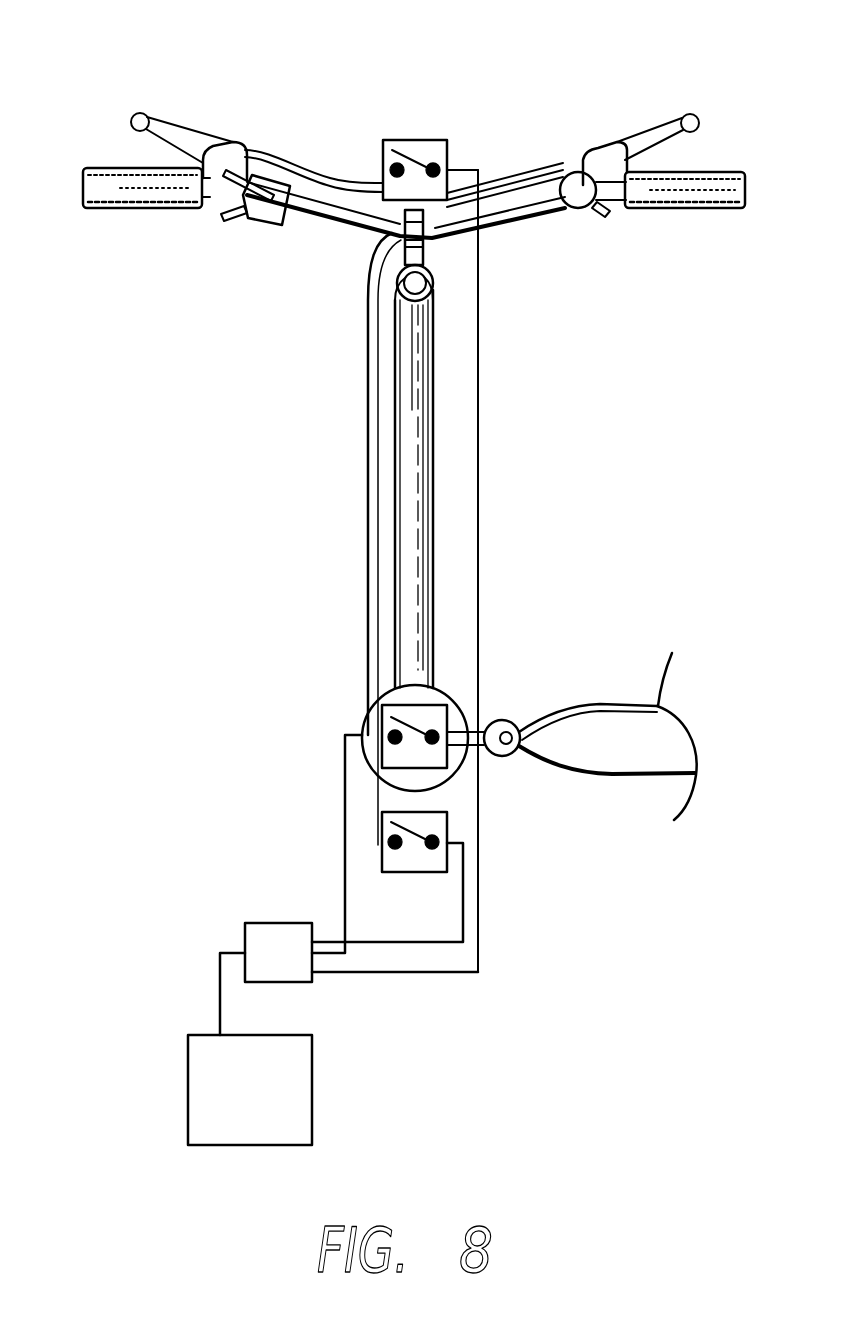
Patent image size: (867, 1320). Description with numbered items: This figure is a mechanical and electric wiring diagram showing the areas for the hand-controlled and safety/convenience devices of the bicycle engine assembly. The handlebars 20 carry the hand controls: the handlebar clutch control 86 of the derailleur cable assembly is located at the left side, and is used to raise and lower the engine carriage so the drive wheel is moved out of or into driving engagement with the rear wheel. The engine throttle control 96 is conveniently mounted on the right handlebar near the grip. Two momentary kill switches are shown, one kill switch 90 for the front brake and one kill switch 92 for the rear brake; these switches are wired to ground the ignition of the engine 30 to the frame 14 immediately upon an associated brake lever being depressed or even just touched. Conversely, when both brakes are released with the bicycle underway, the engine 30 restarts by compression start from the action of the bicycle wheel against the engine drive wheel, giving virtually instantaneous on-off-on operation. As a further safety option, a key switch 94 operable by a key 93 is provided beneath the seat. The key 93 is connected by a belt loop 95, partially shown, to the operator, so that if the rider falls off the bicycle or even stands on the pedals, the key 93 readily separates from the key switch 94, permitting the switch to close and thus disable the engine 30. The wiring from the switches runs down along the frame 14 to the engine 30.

The handlebars 20 is at (421, 88).
The momentary kill switch 90 is at (440, 152).
The handlebar clutch control 86 is at (262, 248).
The engine throttle control 96 is at (580, 232).
The frame 14 is at (412, 514).
The key switch 94 is at (432, 718).
The key 93 is at (494, 730).
The belt loop 95 is at (602, 778).
The momentary kill switch 92 is at (437, 822).
The engine 30 is at (203, 1106).